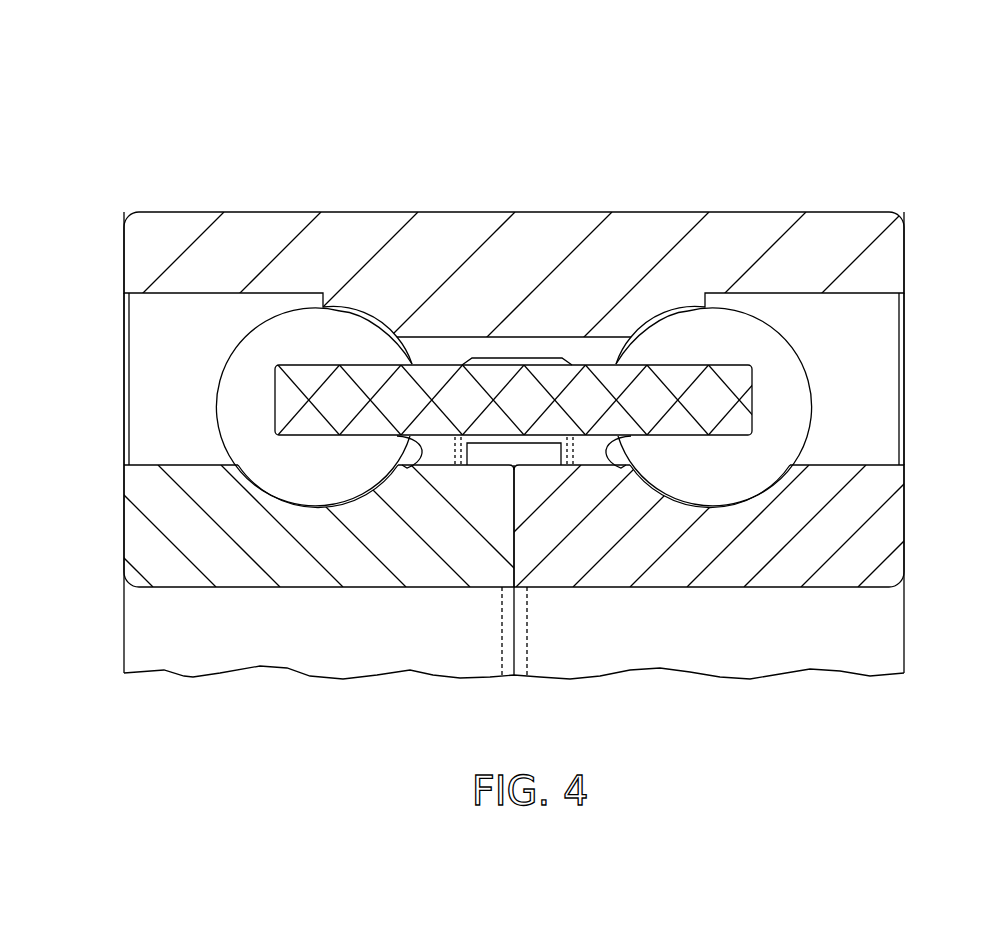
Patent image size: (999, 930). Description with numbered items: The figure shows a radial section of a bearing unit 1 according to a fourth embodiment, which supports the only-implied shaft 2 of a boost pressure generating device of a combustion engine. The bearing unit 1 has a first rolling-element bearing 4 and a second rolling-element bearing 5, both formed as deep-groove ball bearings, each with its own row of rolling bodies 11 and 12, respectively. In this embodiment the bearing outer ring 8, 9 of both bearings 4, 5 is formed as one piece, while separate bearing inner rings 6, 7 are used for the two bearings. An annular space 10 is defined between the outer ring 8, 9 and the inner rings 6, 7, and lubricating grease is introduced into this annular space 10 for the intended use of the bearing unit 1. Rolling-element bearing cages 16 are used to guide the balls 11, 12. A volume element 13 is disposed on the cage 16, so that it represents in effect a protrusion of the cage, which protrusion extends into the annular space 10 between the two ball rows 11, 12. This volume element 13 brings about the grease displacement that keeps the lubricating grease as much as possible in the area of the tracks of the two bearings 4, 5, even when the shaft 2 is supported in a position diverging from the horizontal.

The bearing unit 1 is at (664, 136).
The shaft 2 is at (848, 647).
The first rolling-element bearing 4 is at (278, 202).
The second rolling-element bearing 5 is at (734, 202).
The inner ring 6 is at (320, 560).
The inner ring 7 is at (732, 560).
The outer ring 8 is at (368, 243).
The outer ring 9 is at (820, 242).
The annular space 10 is at (185, 359).
The rolling bodies 11 is at (257, 389).
The rolling bodies 12 is at (771, 389).
The volume element 13 is at (517, 397).
The rolling-element bearing cage 16 is at (343, 408).